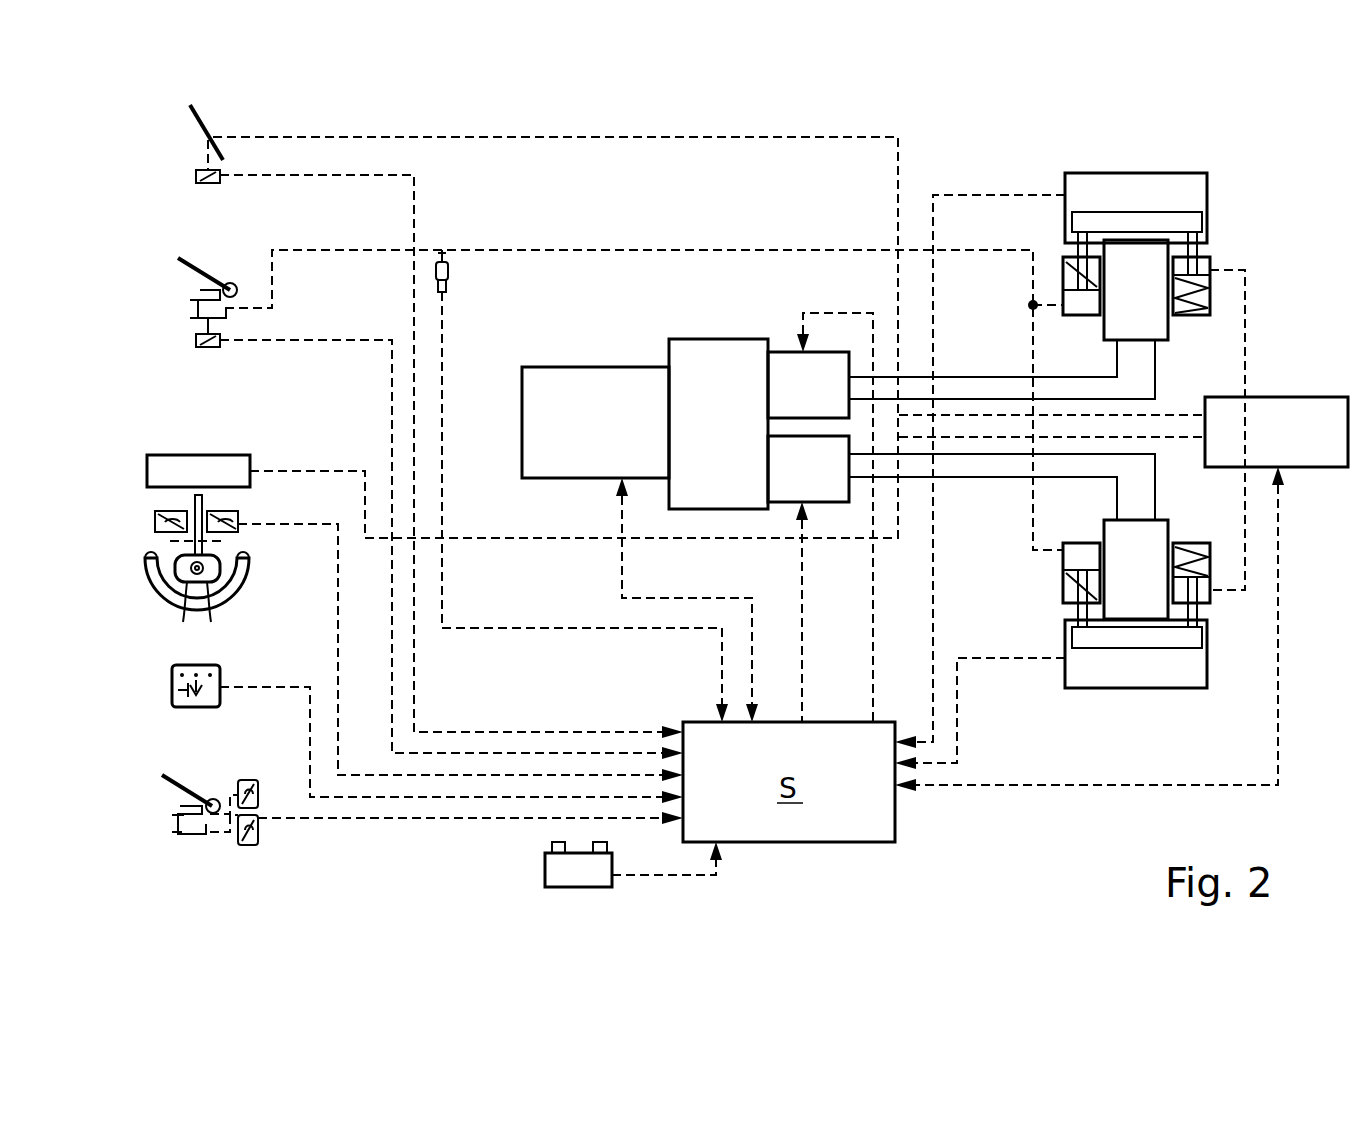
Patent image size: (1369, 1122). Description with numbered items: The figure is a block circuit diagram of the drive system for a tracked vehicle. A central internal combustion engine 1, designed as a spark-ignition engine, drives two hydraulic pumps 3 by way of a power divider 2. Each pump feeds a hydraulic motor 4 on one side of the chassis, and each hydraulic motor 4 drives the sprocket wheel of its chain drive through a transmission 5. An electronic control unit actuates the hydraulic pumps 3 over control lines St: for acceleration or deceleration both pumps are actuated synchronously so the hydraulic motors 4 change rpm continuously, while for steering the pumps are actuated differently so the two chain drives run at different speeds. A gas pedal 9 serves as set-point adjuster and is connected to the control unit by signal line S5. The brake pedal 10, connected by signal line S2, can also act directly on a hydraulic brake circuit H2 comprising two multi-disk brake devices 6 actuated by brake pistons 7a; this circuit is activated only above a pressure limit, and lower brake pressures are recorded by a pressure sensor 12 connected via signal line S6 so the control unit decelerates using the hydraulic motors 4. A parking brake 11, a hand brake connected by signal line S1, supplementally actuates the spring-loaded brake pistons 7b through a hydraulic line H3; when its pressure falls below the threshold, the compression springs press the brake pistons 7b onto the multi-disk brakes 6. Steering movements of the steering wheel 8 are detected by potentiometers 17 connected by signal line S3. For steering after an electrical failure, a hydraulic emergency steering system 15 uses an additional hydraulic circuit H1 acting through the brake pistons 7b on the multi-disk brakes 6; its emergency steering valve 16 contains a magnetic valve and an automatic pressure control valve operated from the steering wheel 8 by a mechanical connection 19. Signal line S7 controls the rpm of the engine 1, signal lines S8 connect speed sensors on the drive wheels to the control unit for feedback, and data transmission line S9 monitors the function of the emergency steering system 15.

The internal combustion engine 1 is at (603, 437).
The power divider 2 is at (728, 437).
The hydraulic pumps 3 is at (818, 400).
The hydraulic motors 4 is at (1146, 303).
The transmission 5 is at (1146, 208).
The brake devices 6 is at (1192, 222).
The brake pistons 7a is at (1080, 312).
The brake pistons 7b is at (1192, 318).
The steering wheel 8 is at (258, 610).
The gas pedal 9 is at (190, 850).
The brake pedal 10 is at (185, 282).
The parking brake 11 is at (185, 138).
The pressure sensor 12 is at (450, 276).
The hydraulic emergency steering system 15 is at (1330, 388).
The emergency steering valve 16 is at (196, 457).
The potentiometers 17 is at (172, 538).
The mechanical connection 19 is at (203, 505).
The hydraulic circuit H1 is at (468, 538).
The hydraulic brake circuit H2 is at (808, 250).
The hydraulic line H3 is at (648, 137).
The signal line S1 is at (426, 728).
The signal line S2 is at (485, 752).
The signal line S3 is at (542, 773).
The signal line S5 is at (362, 818).
The signal line S6 is at (486, 626).
The signal and control line S7 is at (695, 598).
The signal lines S8 is at (938, 545).
The data transmission line S9 is at (965, 785).
The control lines St is at (802, 605).